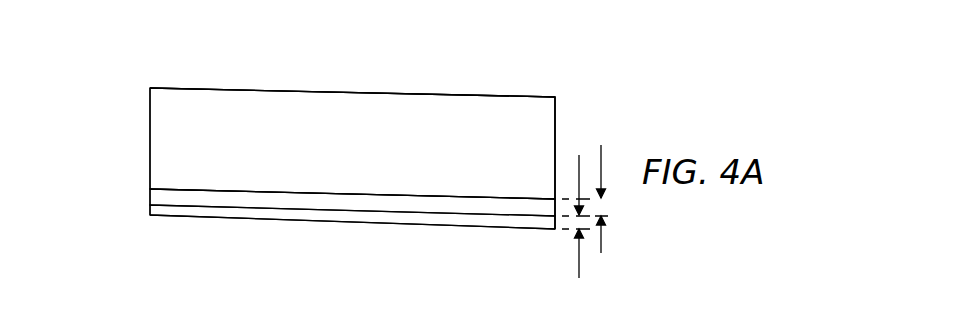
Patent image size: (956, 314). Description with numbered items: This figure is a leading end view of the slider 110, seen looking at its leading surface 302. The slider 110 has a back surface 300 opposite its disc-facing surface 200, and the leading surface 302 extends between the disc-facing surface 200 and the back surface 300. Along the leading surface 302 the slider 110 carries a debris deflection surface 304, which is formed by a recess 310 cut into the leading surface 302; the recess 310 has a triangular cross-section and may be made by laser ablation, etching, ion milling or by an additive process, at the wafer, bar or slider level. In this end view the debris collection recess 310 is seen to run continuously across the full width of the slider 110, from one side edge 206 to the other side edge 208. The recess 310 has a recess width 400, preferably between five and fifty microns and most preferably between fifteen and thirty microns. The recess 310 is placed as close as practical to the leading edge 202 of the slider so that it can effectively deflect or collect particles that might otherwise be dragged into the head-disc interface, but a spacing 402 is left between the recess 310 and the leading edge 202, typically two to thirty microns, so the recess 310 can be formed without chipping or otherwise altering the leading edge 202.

The slider 110 is at (512, 67).
The disc-facing surface 200 is at (360, 226).
The leading edge 202 is at (208, 218).
The side edge 206 is at (556, 112).
The side edge 208 is at (150, 115).
The back surface 300 is at (366, 92).
The leading surface 302 is at (293, 128).
The debris deflection surface 304 is at (163, 197).
The recess 310 is at (255, 193).
The recess width 400 is at (601, 240).
The spacing 402 is at (578, 262).